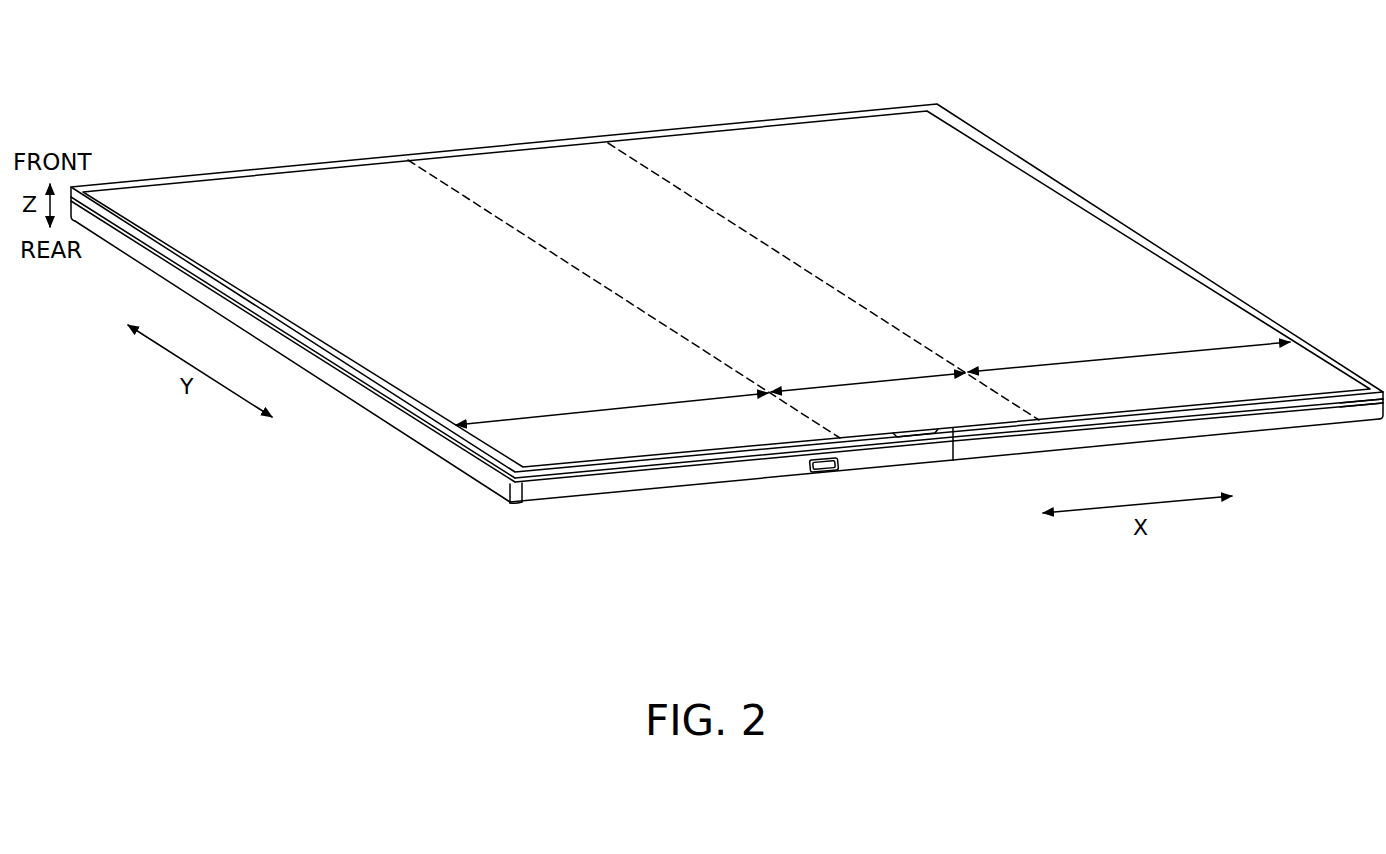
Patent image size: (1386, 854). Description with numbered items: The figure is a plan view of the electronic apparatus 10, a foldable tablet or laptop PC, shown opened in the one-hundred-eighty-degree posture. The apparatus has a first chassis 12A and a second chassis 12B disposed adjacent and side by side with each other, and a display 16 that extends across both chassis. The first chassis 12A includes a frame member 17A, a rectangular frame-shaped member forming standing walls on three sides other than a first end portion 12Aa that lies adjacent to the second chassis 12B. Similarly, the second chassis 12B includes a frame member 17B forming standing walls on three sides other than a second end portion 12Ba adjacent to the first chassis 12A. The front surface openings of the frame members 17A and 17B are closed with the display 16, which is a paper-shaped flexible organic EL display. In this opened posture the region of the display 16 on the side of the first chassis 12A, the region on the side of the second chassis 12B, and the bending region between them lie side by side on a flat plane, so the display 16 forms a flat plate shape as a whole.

The electronic apparatus 10 is at (115, 89).
The display 16 is at (958, 178).
The first chassis 12A is at (660, 502).
The second chassis 12B is at (1280, 440).
The first end portion 12Aa is at (957, 455).
The second end portion 12Ba is at (960, 451).
The frame member 17A is at (557, 497).
The frame member 17B is at (1343, 421).